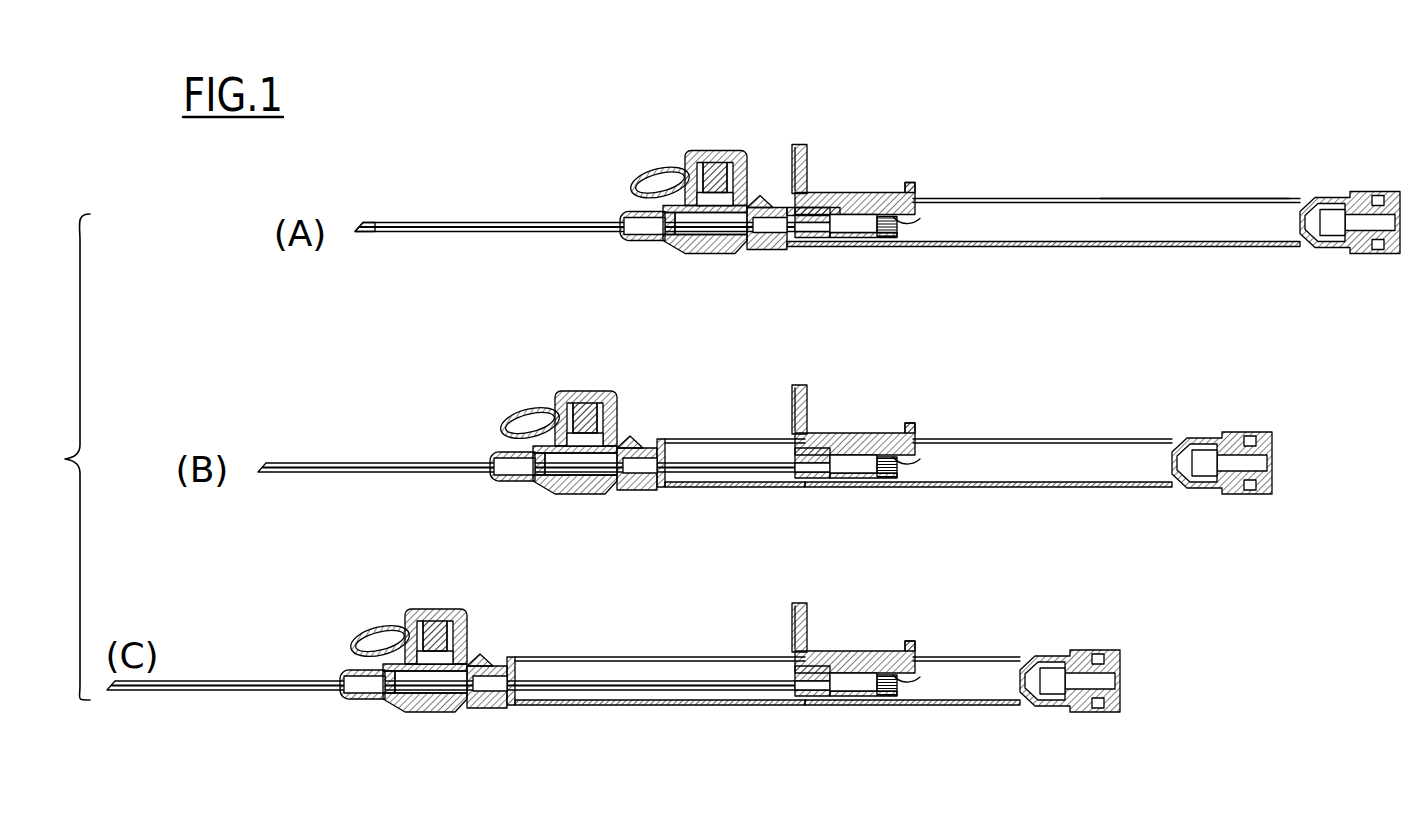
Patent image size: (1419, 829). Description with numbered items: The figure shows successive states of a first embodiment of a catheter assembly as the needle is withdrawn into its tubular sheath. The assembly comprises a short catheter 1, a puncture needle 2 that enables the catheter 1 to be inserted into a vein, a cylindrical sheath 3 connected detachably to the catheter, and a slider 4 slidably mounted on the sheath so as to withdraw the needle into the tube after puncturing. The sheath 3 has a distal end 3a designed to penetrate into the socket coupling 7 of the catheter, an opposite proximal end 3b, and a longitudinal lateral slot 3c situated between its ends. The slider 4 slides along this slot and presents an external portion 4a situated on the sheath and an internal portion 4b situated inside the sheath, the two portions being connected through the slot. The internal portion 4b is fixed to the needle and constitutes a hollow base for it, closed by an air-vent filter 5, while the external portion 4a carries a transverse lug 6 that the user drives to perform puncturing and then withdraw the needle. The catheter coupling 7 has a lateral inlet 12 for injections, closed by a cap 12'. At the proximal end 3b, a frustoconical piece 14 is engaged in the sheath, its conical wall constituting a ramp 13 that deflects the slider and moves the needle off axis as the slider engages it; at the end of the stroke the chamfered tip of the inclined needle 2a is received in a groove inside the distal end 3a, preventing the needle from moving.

The short catheter 1 is at (455, 223).
The puncture needle 2 is at (412, 462).
The chamfered tip of the inclined needle 2a is at (372, 226).
The cylindrical sheath 3 is at (980, 247).
The distal end of the sheath 3a is at (787, 245).
The proximal end of the sheath 3b is at (1340, 248).
The longitudinal lateral slot 3c is at (1172, 200).
The slider 4 is at (860, 178).
The external portion of the slider 4a is at (880, 192).
The internal portion of the slider 4b is at (852, 238).
The air-vent filter 5 is at (898, 225).
The transverse lug 6 is at (807, 160).
The socket coupling 7 is at (678, 160).
The lateral inlet 12 is at (594, 376).
The cap 12' is at (576, 360).
The ramp 13 is at (1305, 213).
The piece 14 is at (1330, 217).